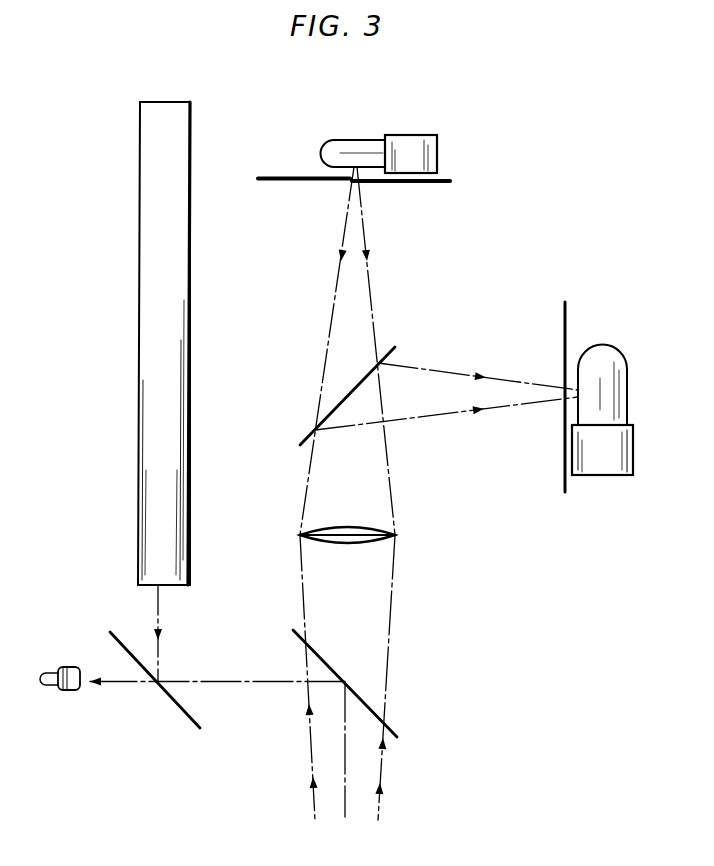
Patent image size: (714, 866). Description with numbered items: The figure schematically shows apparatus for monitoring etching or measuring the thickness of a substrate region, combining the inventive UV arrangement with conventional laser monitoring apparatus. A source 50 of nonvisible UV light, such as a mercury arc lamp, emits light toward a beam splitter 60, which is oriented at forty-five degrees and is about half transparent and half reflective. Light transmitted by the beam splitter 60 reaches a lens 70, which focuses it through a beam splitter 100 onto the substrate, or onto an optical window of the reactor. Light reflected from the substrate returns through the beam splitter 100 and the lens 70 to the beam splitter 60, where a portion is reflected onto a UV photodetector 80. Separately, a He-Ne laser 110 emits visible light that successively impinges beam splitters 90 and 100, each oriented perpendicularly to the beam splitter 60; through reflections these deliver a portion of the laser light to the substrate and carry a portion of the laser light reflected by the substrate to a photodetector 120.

The source of nonvisible light 50 is at (437, 153).
The beam splitter 60 is at (393, 352).
The lens 70 is at (340, 525).
The photodetector 80 is at (617, 354).
The beam splitter 90 is at (176, 690).
The beam splitter 100 is at (332, 665).
The He-Ne laser 110 is at (190, 392).
The photodetector 120 is at (49, 672).